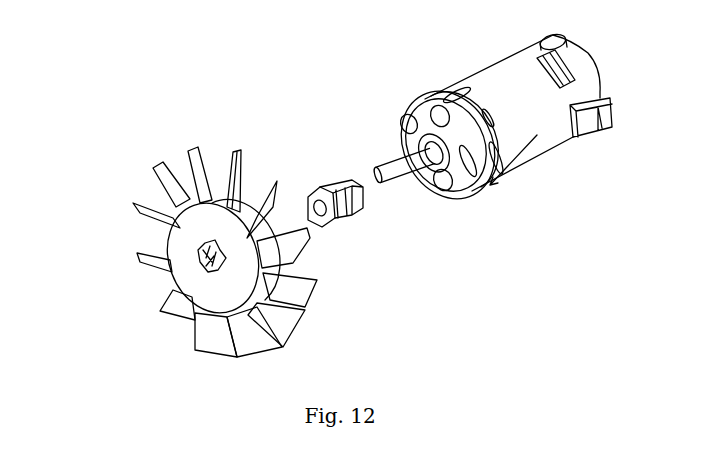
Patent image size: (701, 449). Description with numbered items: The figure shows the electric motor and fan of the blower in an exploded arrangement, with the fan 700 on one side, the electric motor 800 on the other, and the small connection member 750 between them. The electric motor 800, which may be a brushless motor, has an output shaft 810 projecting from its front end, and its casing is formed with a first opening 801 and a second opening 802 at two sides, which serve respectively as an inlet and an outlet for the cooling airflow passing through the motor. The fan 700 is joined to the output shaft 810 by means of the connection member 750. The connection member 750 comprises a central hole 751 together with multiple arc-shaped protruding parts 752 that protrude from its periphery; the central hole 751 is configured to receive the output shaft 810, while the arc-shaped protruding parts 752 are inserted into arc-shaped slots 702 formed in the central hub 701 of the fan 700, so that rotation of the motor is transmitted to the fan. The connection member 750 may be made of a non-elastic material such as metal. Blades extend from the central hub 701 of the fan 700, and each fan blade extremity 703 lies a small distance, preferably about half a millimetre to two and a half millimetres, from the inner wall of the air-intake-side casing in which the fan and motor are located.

The fan 700 is at (230, 237).
The central hub 701 is at (185, 245).
The arc-shaped slots 702 is at (198, 254).
The fan blade extremity 703 is at (238, 148).
The connection member 750 is at (357, 201).
The central hole 751 is at (335, 228).
The arc-shaped protruding parts 752 is at (325, 187).
The electric motor 800 is at (471, 142).
The first opening 801 is at (566, 54).
The second opening 802 is at (497, 197).
The output shaft 810 is at (388, 163).